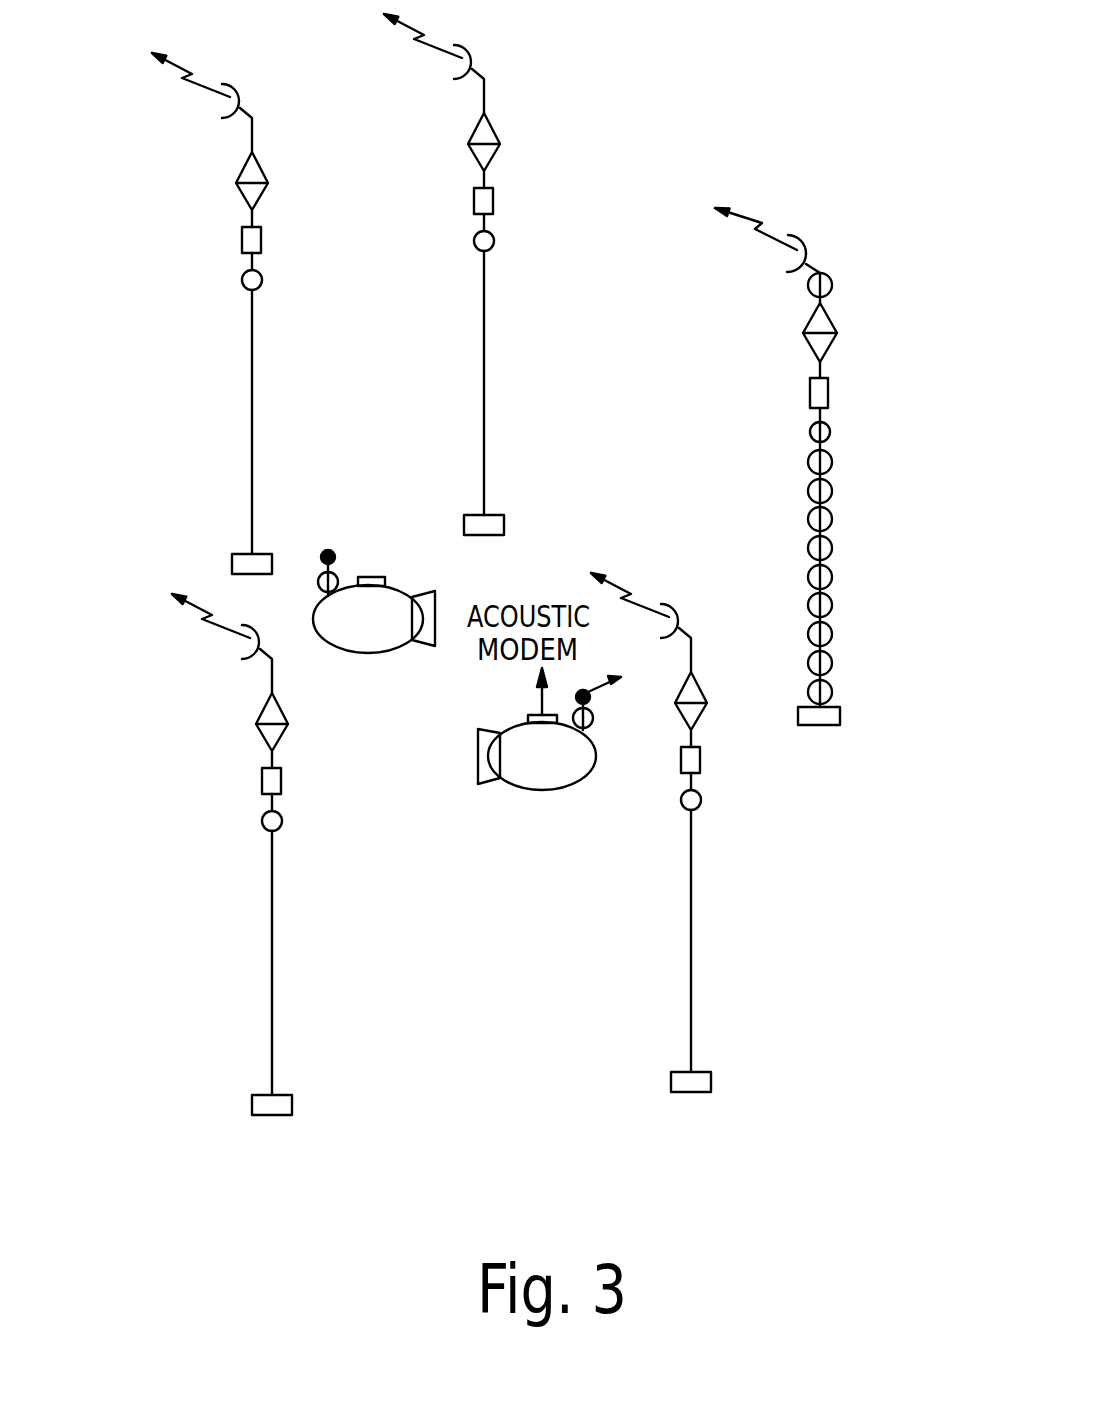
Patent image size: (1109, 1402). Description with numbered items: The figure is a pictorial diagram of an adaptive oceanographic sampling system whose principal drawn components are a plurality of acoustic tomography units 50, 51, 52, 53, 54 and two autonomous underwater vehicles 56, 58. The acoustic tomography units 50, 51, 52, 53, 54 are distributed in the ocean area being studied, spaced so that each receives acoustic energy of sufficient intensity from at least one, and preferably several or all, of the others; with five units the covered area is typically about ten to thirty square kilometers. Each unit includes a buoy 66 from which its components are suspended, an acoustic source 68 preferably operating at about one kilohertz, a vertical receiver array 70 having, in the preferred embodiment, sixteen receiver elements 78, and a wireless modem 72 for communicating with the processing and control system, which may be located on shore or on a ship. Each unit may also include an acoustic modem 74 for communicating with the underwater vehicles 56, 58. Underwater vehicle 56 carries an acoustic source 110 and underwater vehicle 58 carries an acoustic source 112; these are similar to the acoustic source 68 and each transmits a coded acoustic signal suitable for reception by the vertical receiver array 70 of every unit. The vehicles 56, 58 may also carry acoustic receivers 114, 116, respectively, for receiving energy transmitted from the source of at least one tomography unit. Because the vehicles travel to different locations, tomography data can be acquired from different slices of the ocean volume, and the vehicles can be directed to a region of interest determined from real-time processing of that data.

The acoustic tomography unit 50 is at (236, 379).
The acoustic tomography unit 51 is at (464, 341).
The acoustic tomography unit 53 is at (254, 921).
The acoustic tomography unit 54 is at (676, 906).
The acoustic tomography unit 52 is at (752, 445).
The autonomous underwater vehicle 56 is at (355, 564).
The autonomous underwater vehicle 58 is at (566, 741).
The buoy 66 is at (805, 326).
The acoustic source 68 is at (810, 430).
The vertical receiver array 70 is at (860, 587).
The wireless modem 72 is at (833, 283).
The acoustic modem 74 is at (810, 392).
The receiver elements 78 is at (832, 548).
The acoustic source 110 is at (333, 550).
The acoustic source 112 is at (590, 685).
The acoustic receiver 114 is at (318, 582).
The acoustic receiver 116 is at (593, 724).